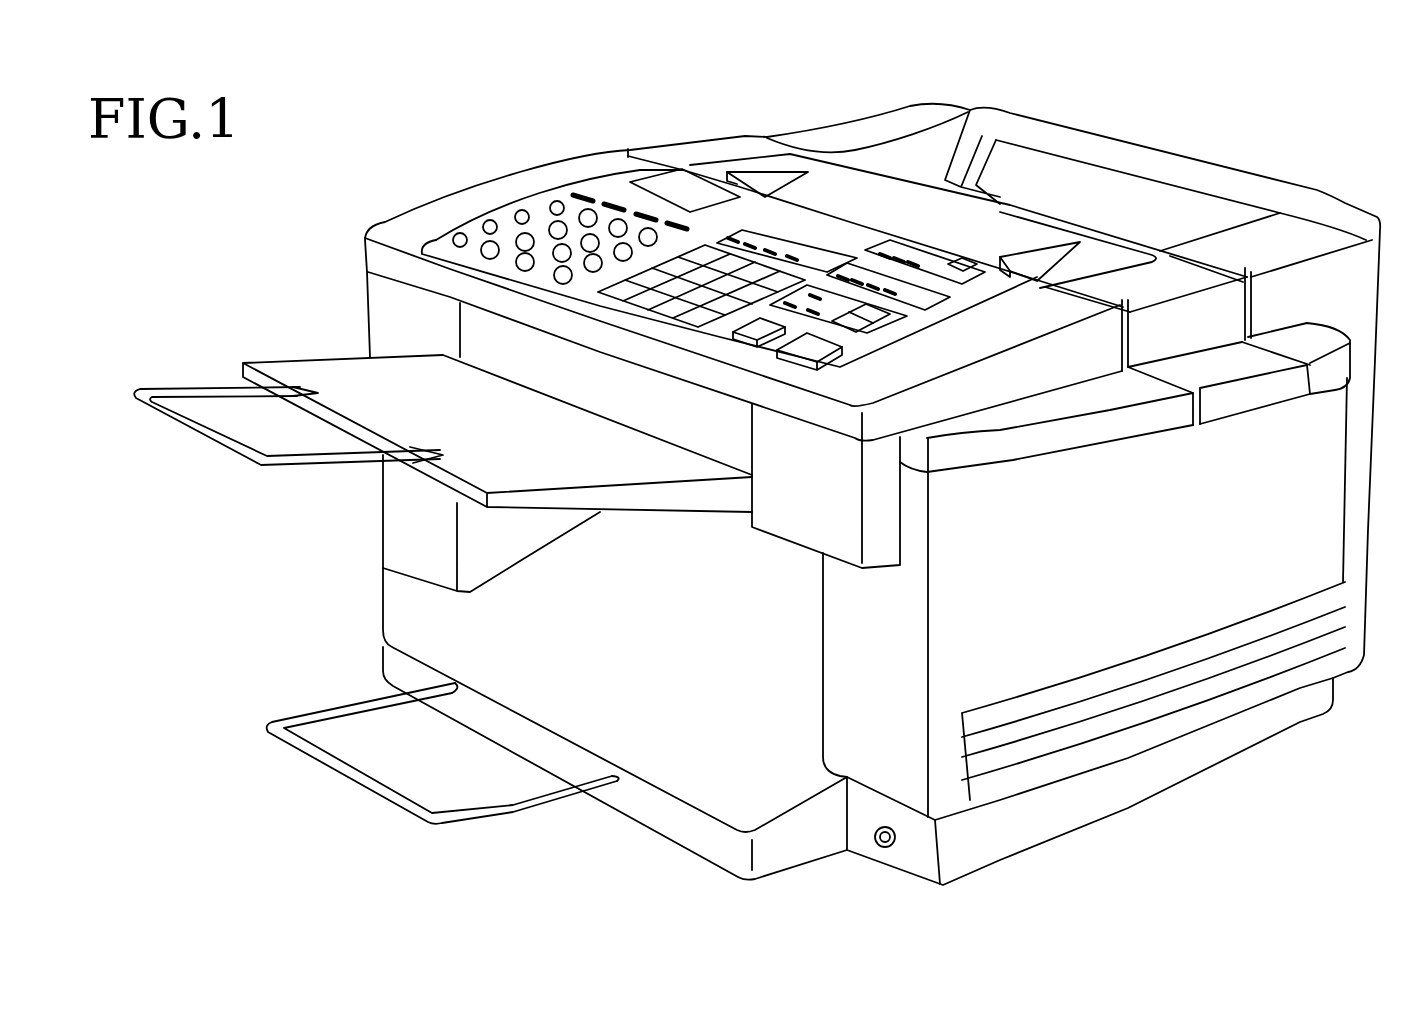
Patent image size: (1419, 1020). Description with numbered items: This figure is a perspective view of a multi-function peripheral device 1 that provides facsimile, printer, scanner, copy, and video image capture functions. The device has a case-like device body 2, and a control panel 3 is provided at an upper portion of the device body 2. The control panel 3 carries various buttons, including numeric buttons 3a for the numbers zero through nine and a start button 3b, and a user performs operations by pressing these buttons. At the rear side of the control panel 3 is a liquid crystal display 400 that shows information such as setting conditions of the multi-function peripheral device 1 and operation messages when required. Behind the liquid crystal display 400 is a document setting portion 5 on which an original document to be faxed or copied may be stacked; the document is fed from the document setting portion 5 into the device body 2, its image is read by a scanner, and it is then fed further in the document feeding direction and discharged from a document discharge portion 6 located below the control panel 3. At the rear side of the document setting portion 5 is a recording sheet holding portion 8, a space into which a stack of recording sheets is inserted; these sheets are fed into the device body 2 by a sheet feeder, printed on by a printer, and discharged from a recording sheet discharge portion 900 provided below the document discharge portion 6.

The multi-function peripheral device 1 is at (1305, 118).
The device body 2 is at (1323, 520).
The control panel 3 is at (526, 182).
The numeric buttons 3a is at (490, 258).
The start button 3b is at (807, 350).
The document setting portion 5 is at (837, 183).
The document discharge portion 6 is at (545, 413).
The recording sheet holding portion 8 is at (1060, 180).
The liquid crystal display (LCD) 400 is at (682, 183).
The recording sheet discharge portion 900 is at (714, 626).